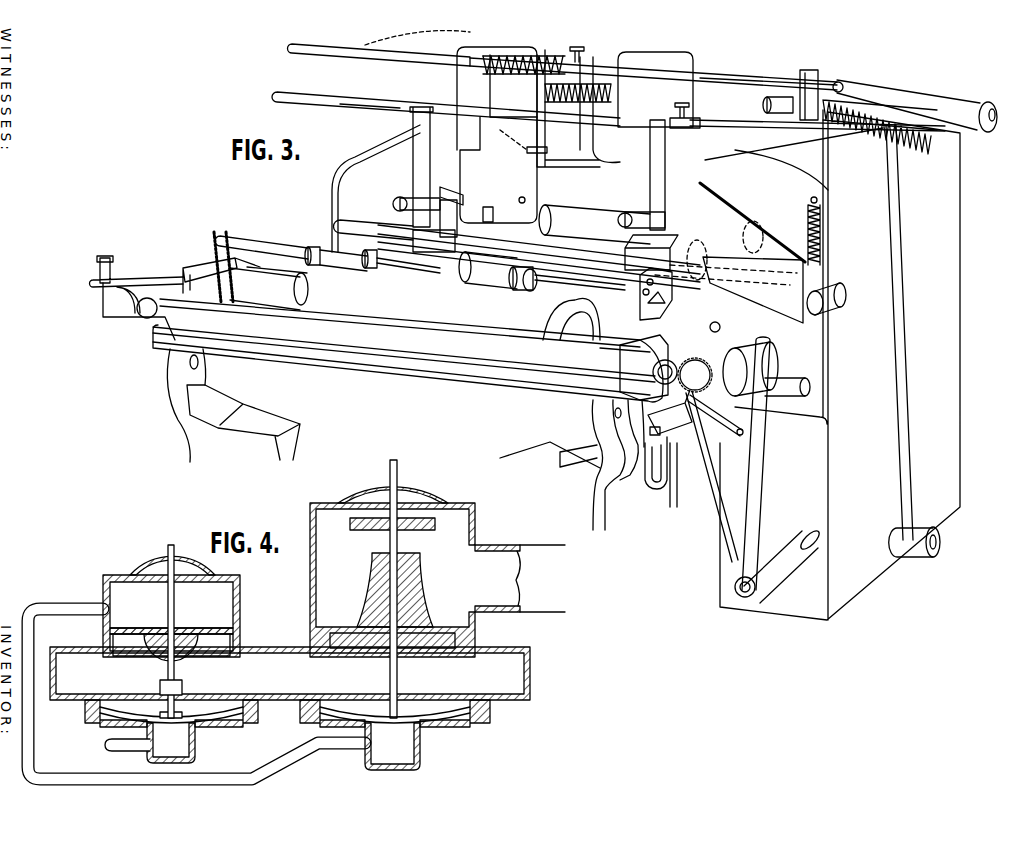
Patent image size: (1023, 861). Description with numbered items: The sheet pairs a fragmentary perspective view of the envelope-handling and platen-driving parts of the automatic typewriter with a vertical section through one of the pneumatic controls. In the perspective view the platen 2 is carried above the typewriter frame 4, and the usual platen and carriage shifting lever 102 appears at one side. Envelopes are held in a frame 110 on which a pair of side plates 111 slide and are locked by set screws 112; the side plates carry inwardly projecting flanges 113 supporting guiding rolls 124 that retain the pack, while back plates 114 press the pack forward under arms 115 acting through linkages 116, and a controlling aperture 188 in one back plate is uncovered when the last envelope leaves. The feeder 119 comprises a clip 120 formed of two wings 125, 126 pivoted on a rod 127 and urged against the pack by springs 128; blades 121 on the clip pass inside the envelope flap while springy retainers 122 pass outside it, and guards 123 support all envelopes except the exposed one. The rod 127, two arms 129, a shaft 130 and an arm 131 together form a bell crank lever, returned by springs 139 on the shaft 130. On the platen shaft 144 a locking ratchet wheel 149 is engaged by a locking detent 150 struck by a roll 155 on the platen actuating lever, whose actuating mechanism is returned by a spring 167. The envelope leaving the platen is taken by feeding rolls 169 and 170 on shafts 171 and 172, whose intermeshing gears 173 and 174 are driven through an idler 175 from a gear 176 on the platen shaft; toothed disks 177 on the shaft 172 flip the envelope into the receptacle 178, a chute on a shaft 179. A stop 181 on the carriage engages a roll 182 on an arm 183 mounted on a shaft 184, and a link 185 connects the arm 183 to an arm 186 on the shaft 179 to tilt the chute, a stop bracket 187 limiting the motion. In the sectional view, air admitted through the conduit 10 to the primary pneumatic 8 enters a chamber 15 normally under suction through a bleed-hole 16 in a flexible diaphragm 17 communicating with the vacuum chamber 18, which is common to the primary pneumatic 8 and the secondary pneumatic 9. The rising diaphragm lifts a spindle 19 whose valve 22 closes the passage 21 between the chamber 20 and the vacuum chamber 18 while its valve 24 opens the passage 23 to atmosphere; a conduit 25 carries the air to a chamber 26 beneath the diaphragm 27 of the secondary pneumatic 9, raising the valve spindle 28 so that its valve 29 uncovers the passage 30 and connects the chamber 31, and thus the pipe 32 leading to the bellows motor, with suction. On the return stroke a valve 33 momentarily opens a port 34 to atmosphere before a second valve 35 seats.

In FIG. 3, the platen 2 is at (269, 289).
In FIG. 3, the typewriter frame 4 is at (243, 422).
In FIG. 4, the primary pneumatic 8 is at (240, 604).
In FIG. 4, the secondary pneumatic 9 is at (310, 583).
In FIG. 4, the conduit 10 is at (105, 746).
In FIG. 4, the chamber 15 is at (171, 743).
In FIG. 4, the bleed-hole 16 is at (162, 710).
In FIG. 4, the flexible diaphragm 17 is at (210, 712).
In FIG. 4, the vacuum chamber 18 is at (290, 673).
In FIG. 4, the spindle 19 is at (176, 672).
In FIG. 4, the chamber 20 is at (137, 601).
In FIG. 4, the passage 21 is at (178, 631).
In FIG. 4, the valve 22 is at (150, 648).
In FIG. 4, the passage 23 is at (176, 580).
In FIG. 4, the valve 24 is at (150, 572).
In FIG. 4, the conduit 25 is at (88, 604).
In FIG. 4, the chamber 26 is at (392, 746).
In FIG. 4, the diaphragm 27 is at (435, 712).
In FIG. 4, the valve spindle 28 is at (397, 545).
In FIG. 4, the valve 29 is at (416, 590).
In FIG. 4, the passage 30 is at (382, 635).
In FIG. 4, the chamber 31 is at (345, 587).
In FIG. 4, the pipe 32 is at (520, 578).
In FIG. 4, the valve 33 is at (365, 532).
In FIG. 4, the port 34 is at (378, 504).
In FIG. 4, the second valve 35 is at (425, 501).
In FIG. 3, the platen and carriage shifting lever 102 is at (100, 285).
In FIG. 3, the frame 110 is at (335, 104).
In FIG. 3, the side plates 111 is at (607, 188).
In FIG. 3, the set screws 112 is at (680, 104).
In FIG. 3, the inwardly projecting flanges 113 is at (413, 152).
In FIG. 3, the back plates 114 is at (655, 58).
In FIG. 3, the arms 115 is at (395, 128).
In FIG. 3, the linkages 116 is at (400, 104).
In FIG. 3, the feeder 119 is at (972, 108).
In FIG. 3, the clip 120 is at (545, 60).
In FIG. 3, the blades 121 is at (497, 130).
In FIG. 3, the retainers 122 is at (527, 152).
In FIG. 3, the guards 123 is at (545, 249).
In FIG. 3, the guiding rolls 124 is at (405, 206).
In FIG. 3, the wing 125 is at (497, 98).
In FIG. 3, the wing 126 is at (600, 92).
In FIG. 3, the rod 127 is at (385, 52).
In FIG. 3, the springs 128 is at (524, 80).
In FIG. 3, the arms 129 is at (920, 94).
In FIG. 3, the shaft 130 is at (770, 97).
In FIG. 3, the arm 131 is at (715, 75).
In FIG. 3, the springs 139 is at (870, 128).
In FIG. 3, the platen shaft 144 is at (670, 412).
In FIG. 3, the locking ratchet wheel 149 is at (658, 382).
In FIG. 3, the locking detent 150 is at (740, 348).
In FIG. 3, the roll 155 is at (717, 322).
In FIG. 3, the spring 167 is at (808, 213).
In FIG. 3, the feeding rolls 169 is at (333, 238).
In FIG. 3, the feeding rolls 170 is at (372, 268).
In FIG. 3, the shaft 171 is at (297, 243).
In FIG. 3, the shaft 172 is at (400, 272).
In FIG. 3, the intermeshing gear 173 is at (236, 254).
In FIG. 3, the intermeshing gear 174 is at (200, 262).
In FIG. 3, the idler 175 is at (408, 350).
In FIG. 3, the gear 176 is at (400, 326).
In FIG. 3, the toothed disks 177 is at (315, 266).
In FIG. 3, the receptacle 178 is at (730, 253).
In FIG. 3, the shaft 179 is at (822, 310).
In FIG. 3, the stop 181 is at (644, 367).
In FIG. 3, the roll 182 is at (640, 384).
In FIG. 3, the arm 183 is at (722, 514).
In FIG. 3, the shaft 184 is at (785, 545).
In FIG. 3, the link 185 is at (735, 436).
In FIG. 3, the arm 186 is at (770, 432).
In FIG. 3, the stop bracket 187 is at (735, 584).
In FIG. 3, the controlling aperture 188 is at (498, 170).